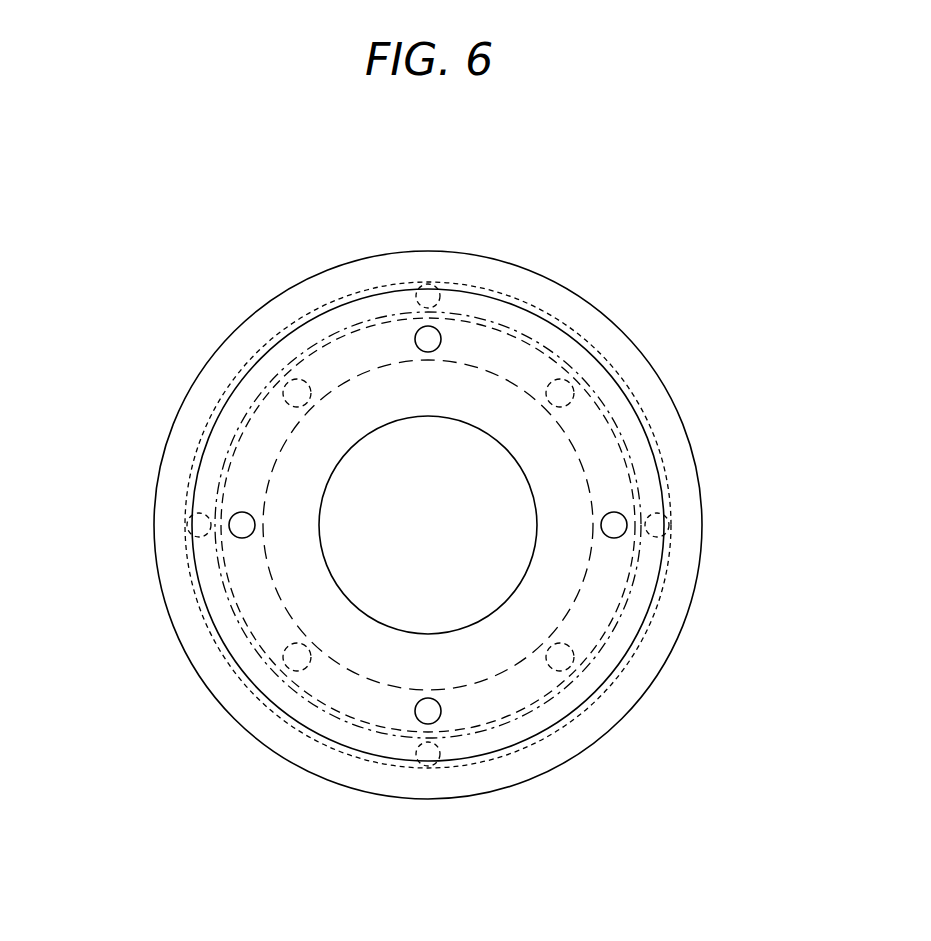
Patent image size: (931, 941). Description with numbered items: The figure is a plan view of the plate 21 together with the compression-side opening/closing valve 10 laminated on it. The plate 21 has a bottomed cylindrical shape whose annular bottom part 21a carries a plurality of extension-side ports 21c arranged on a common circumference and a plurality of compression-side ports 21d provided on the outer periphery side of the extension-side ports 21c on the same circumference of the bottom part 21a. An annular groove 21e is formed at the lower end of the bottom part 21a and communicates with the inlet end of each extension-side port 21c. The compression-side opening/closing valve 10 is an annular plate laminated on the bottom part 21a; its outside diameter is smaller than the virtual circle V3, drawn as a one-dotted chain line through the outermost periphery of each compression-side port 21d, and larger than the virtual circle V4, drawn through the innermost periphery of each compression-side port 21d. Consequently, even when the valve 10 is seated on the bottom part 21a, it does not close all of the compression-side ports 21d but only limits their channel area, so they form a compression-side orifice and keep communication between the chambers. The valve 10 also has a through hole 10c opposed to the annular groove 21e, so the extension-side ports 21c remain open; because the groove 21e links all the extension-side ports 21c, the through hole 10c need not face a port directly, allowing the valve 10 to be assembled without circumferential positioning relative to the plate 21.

The compression-side opening/closing valve 10 is at (645, 460).
The through hole 10c is at (422, 328).
The plate 21 is at (467, 525).
The bottom part 21a is at (632, 366).
The extension-side port 21c is at (568, 382).
The compression-side port 21d is at (445, 287).
The annular groove 21e is at (526, 688).
The virtual circle V3 is at (610, 693).
The virtual circle V4 is at (633, 588).